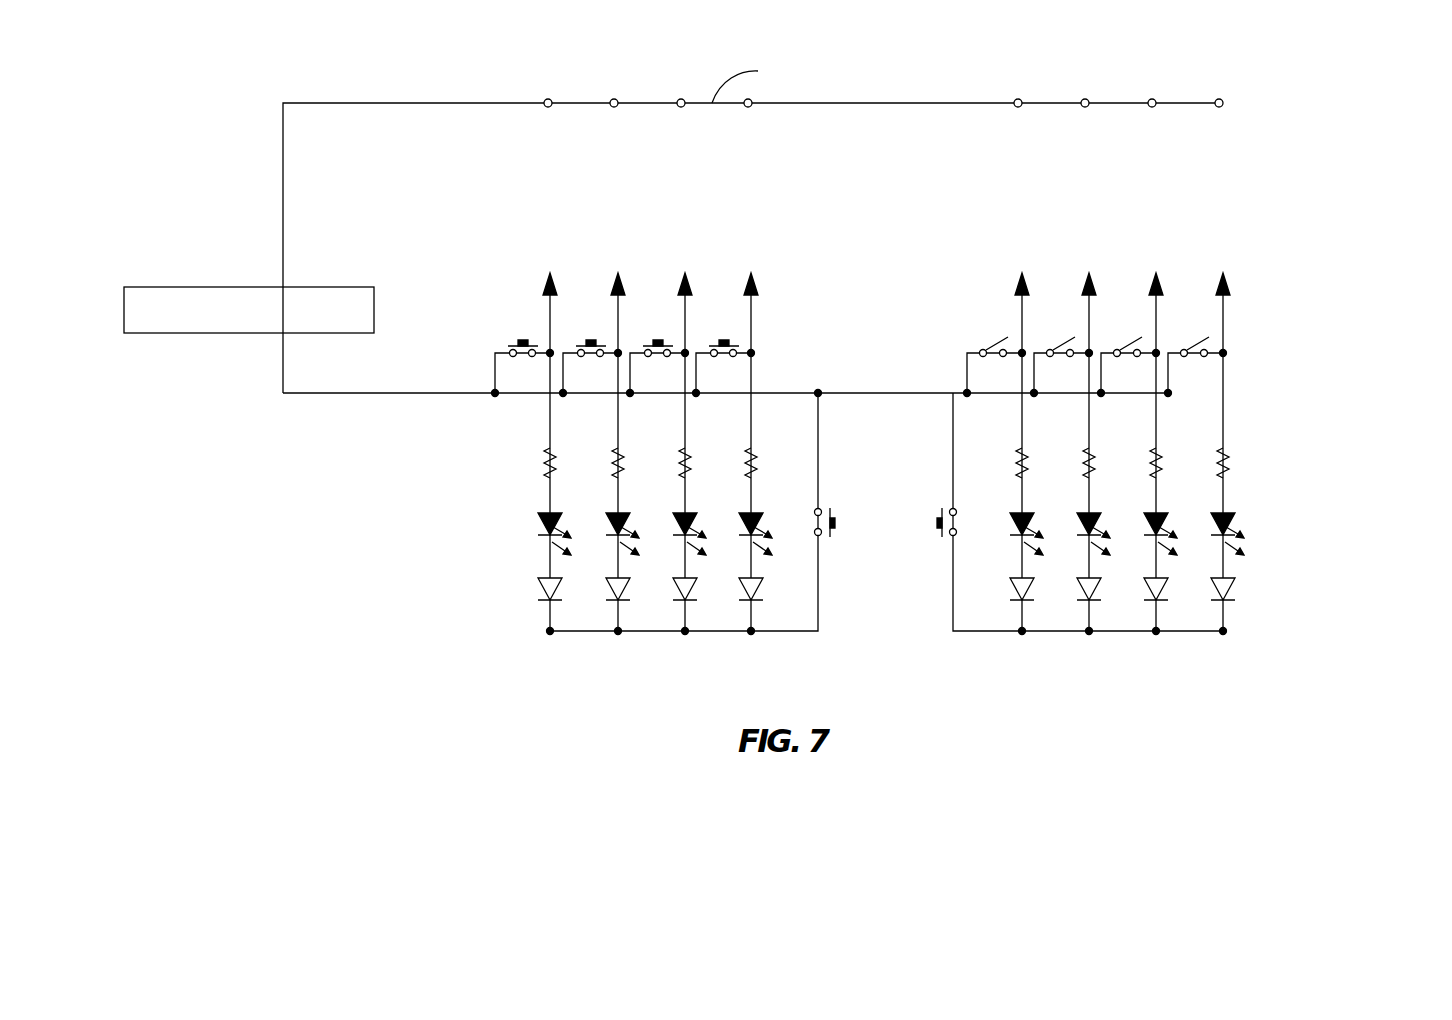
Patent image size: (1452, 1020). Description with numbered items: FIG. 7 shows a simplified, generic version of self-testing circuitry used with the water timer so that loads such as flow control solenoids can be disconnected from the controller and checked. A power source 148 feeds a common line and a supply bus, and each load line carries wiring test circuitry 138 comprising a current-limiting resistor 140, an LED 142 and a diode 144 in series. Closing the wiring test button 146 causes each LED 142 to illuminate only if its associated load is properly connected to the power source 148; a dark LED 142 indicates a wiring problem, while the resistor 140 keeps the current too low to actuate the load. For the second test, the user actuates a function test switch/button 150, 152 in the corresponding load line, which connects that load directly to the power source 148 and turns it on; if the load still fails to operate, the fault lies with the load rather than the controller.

The wiring test circuitry 138 is at (1328, 408).
The current-limiting resistor 140 is at (1231, 460).
The LED 142 is at (1233, 517).
The diode 144 is at (1230, 590).
The wiring test button 146 is at (835, 532).
The power source 148 is at (347, 287).
The function test switch/button 150 is at (1000, 343).
The function test switch/button 152 is at (723, 335).